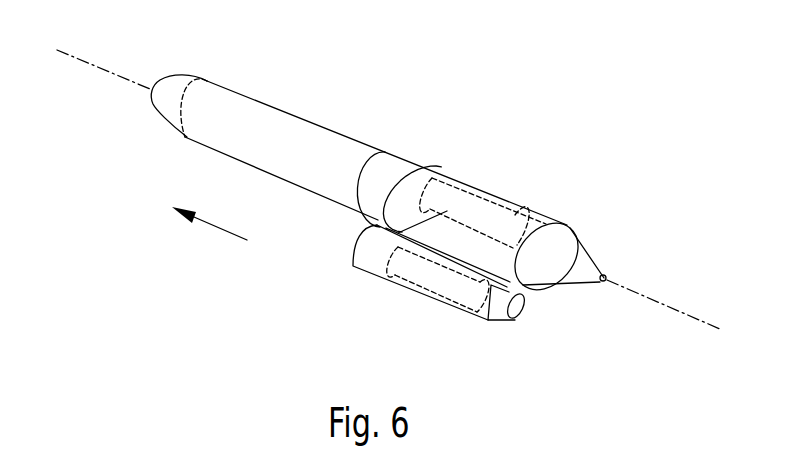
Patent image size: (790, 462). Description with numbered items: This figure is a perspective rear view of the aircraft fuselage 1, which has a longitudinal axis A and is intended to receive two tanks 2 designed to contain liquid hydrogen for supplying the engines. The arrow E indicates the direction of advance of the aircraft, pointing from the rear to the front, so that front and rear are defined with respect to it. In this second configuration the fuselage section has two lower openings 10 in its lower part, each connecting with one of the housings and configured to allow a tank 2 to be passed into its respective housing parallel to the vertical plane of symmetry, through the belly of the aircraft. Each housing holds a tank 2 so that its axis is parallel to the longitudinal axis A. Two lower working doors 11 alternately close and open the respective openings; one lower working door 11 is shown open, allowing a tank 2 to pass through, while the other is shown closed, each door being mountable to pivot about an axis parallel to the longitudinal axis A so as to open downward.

The fuselage 1 is at (335, 98).
The tank 2 is at (484, 208).
The lower opening 10 is at (516, 286).
The lower working door 11 is at (370, 264).
The longitudinal axis A is at (89, 63).
The arrow E is at (209, 218).